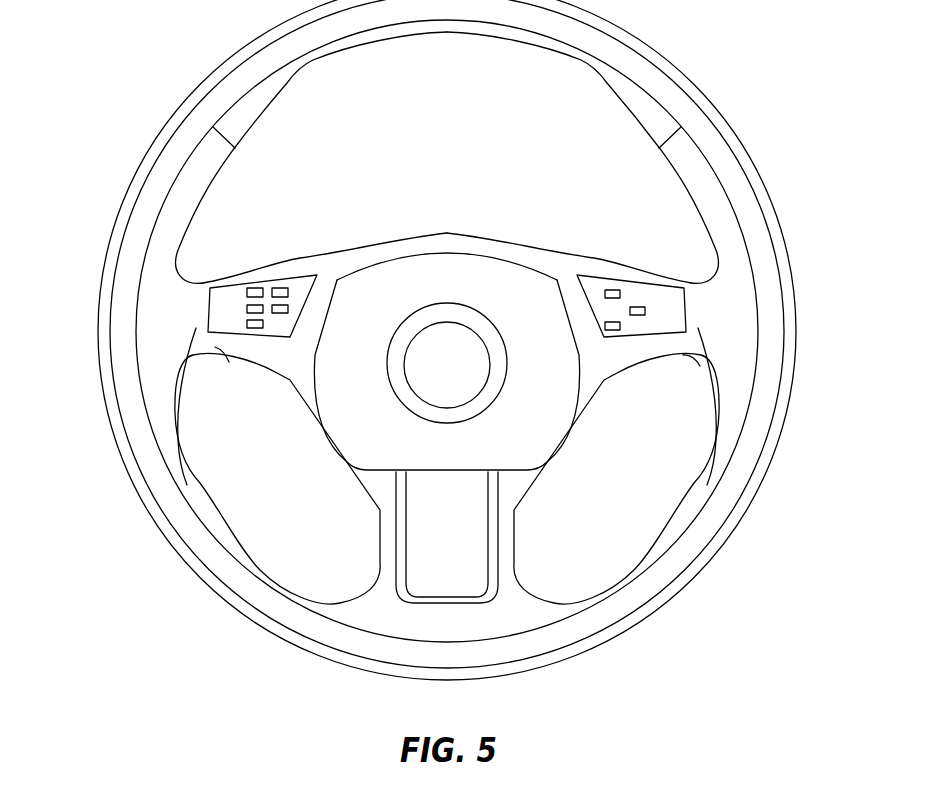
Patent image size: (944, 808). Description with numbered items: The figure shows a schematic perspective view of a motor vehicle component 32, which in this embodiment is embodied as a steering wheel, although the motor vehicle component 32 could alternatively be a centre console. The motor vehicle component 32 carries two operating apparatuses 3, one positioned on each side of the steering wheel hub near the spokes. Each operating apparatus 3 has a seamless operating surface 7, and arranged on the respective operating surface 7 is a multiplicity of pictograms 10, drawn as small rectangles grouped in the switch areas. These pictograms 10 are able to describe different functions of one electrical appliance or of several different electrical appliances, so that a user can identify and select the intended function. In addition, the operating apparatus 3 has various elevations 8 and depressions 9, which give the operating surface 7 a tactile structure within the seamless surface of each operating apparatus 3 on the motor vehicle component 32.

The operating apparatus 3 is at (288, 260).
The operating surface 7 is at (215, 360).
The elevation 8 is at (240, 275).
The depression 9 is at (225, 318).
The pictogram 10 is at (267, 283).
The motor vehicle component 32 is at (773, 323).